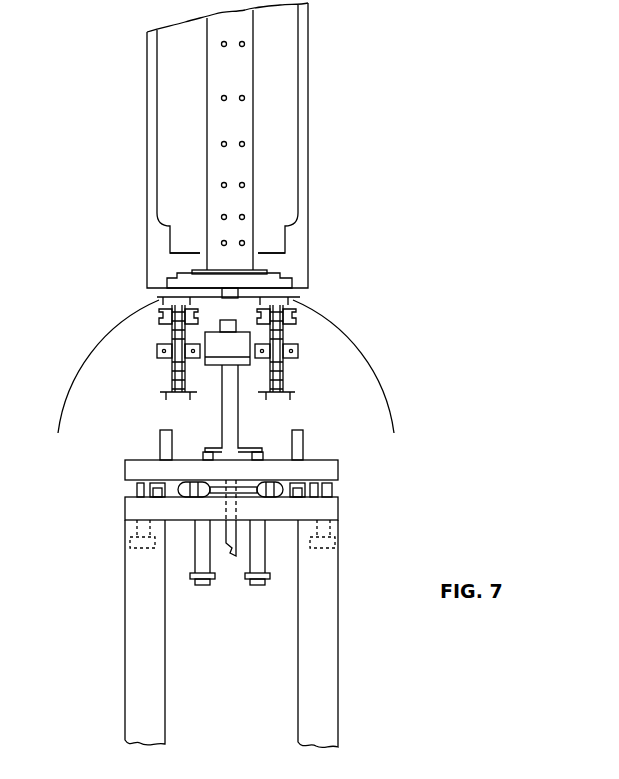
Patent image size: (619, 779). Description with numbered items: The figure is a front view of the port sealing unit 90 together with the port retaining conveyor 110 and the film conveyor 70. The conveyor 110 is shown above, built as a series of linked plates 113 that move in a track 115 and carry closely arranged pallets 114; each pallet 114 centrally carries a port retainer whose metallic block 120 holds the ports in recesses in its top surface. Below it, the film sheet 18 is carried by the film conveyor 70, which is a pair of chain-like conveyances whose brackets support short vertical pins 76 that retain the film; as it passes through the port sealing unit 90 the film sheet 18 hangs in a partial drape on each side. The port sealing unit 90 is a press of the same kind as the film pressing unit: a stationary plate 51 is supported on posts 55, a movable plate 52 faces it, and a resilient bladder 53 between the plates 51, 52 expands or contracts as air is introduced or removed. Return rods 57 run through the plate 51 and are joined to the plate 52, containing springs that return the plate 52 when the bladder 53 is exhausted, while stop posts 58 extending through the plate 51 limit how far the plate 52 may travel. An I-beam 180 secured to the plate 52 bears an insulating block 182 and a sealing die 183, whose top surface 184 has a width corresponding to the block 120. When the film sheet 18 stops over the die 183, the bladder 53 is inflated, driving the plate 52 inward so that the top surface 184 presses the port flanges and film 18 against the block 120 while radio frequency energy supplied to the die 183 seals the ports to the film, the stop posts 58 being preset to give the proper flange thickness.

The port retaining conveyor 110 is at (313, 111).
The linked plates 113 is at (257, 272).
The pallet 114 is at (272, 283).
The track 115 is at (165, 273).
The metallic block 120 is at (300, 297).
The film sheet 18 is at (72, 397).
The film conveyor 70 is at (148, 355).
The pins 76 is at (292, 352).
The sealing die 183 is at (200, 331).
The top surface 184 is at (224, 313).
The I-beam 180 is at (222, 405).
The insulating block 182 is at (230, 346).
The posts 55 is at (160, 440).
The movable plate 52 is at (125, 466).
The stop posts 58 is at (132, 488).
The resilient bladder 53 is at (330, 492).
The stationary plate 51 is at (125, 511).
The port sealing unit 90 is at (348, 520).
The return rods 57 is at (195, 560).